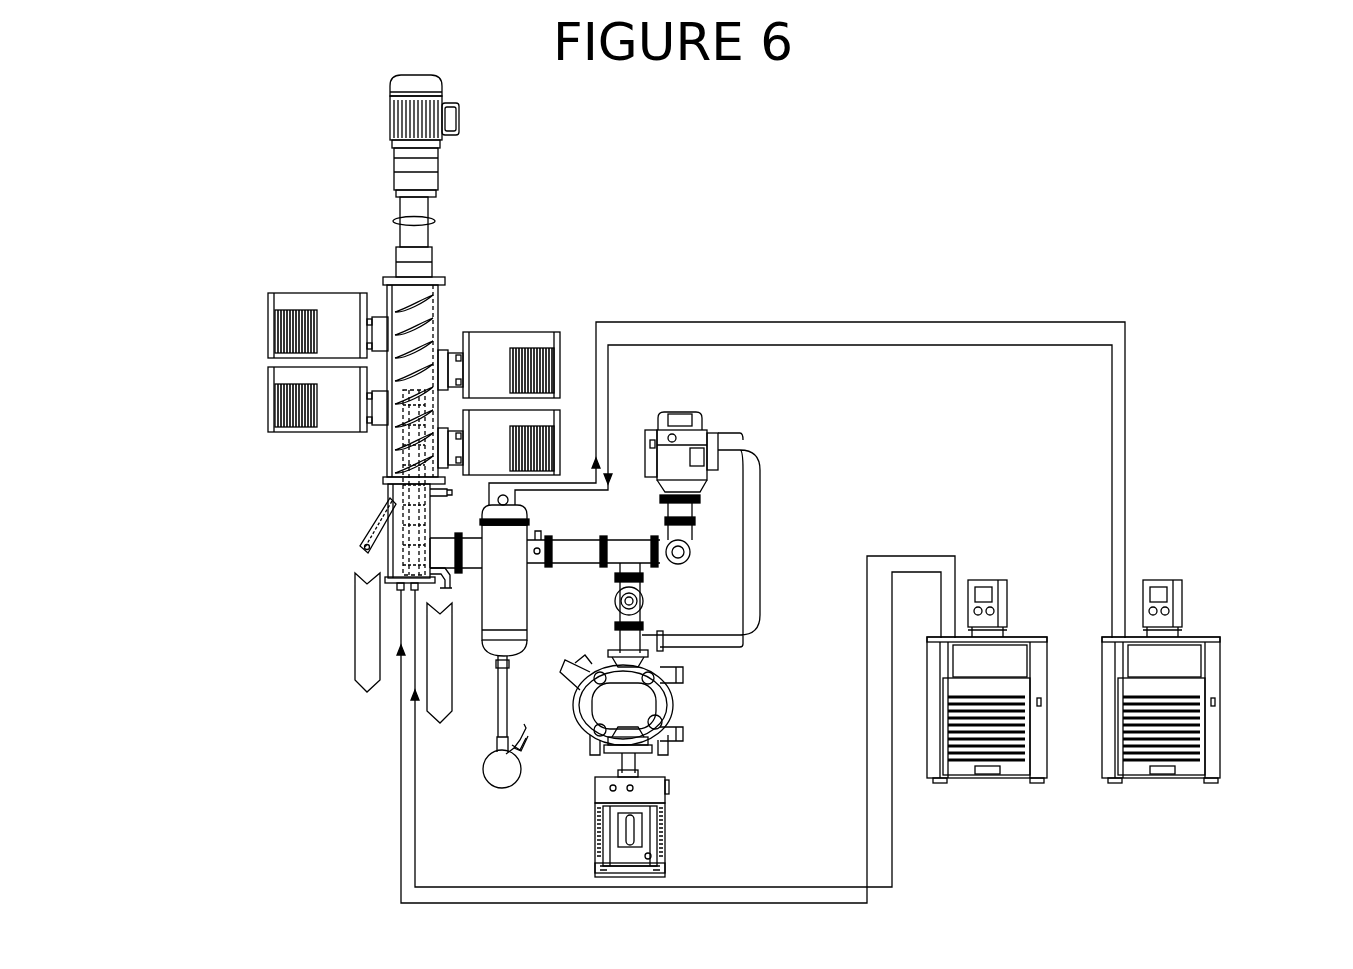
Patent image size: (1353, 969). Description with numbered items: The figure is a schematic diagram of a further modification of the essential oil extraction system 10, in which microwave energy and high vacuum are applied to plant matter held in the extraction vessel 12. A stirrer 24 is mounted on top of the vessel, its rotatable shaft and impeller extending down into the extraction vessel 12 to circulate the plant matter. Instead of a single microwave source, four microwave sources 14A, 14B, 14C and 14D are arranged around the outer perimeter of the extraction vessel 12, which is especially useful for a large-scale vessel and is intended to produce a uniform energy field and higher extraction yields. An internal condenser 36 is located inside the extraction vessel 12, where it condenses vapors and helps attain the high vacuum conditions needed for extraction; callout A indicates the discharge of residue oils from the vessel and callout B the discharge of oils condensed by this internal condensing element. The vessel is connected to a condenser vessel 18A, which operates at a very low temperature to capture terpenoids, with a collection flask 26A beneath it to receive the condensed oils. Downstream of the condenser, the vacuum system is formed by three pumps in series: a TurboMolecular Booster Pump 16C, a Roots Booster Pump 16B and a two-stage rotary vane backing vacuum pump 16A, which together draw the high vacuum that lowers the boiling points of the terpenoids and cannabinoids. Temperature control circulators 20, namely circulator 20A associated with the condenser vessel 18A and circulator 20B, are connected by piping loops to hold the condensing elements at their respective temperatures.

The system 10 is at (756, 241).
The extraction vessel 12 is at (446, 310).
The microwave source 14A is at (251, 293).
The microwave source 14B is at (293, 441).
The microwave source 14C is at (502, 326).
The microwave source 14D is at (572, 424).
The vacuum pump 16A is at (683, 790).
The vacuum pump 16B is at (686, 705).
The vacuum pump 16C is at (726, 422).
The condenser vessel 18A is at (534, 594).
The temperature control circulator 20 is at (1130, 905).
The temperature control circulator 20A is at (1230, 794).
The temperature control circulator 20B is at (1018, 792).
The stirrer 24 is at (448, 153).
The collection flask 26A is at (494, 796).
The internal condenser 36 is at (390, 453).